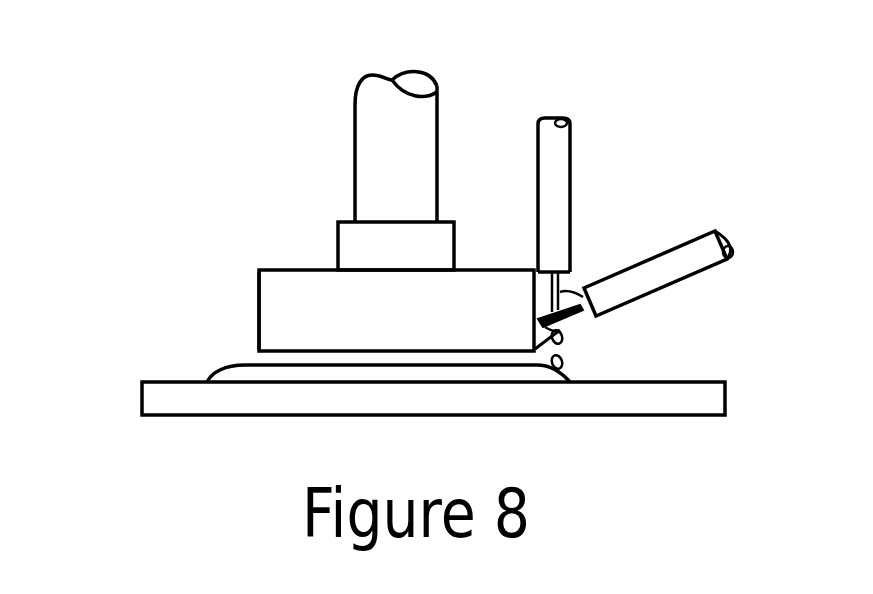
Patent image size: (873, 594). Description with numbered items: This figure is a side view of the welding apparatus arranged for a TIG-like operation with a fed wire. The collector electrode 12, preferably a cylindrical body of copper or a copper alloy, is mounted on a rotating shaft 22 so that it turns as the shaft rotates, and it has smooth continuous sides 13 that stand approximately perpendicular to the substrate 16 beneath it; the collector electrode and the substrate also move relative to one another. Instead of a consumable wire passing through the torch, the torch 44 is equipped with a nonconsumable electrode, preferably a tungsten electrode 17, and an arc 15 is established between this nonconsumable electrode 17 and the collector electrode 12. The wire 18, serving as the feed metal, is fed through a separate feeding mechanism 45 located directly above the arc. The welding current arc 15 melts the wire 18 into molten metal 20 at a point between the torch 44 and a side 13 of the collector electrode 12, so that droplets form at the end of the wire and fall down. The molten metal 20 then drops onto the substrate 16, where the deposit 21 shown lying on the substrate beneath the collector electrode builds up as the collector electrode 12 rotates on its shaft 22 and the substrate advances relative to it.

The collector electrode 12 is at (297, 288).
The sides 13 is at (257, 313).
The arc 15 is at (580, 314).
The substrate 16 is at (153, 393).
The tungsten electrode 17 is at (579, 287).
The wire 18 is at (574, 285).
The molten metal 20 is at (565, 358).
The solder pad 21 is at (241, 368).
The rotating shaft 22 is at (371, 113).
The torch 44 is at (708, 264).
The feeding mechanism 45 is at (566, 138).